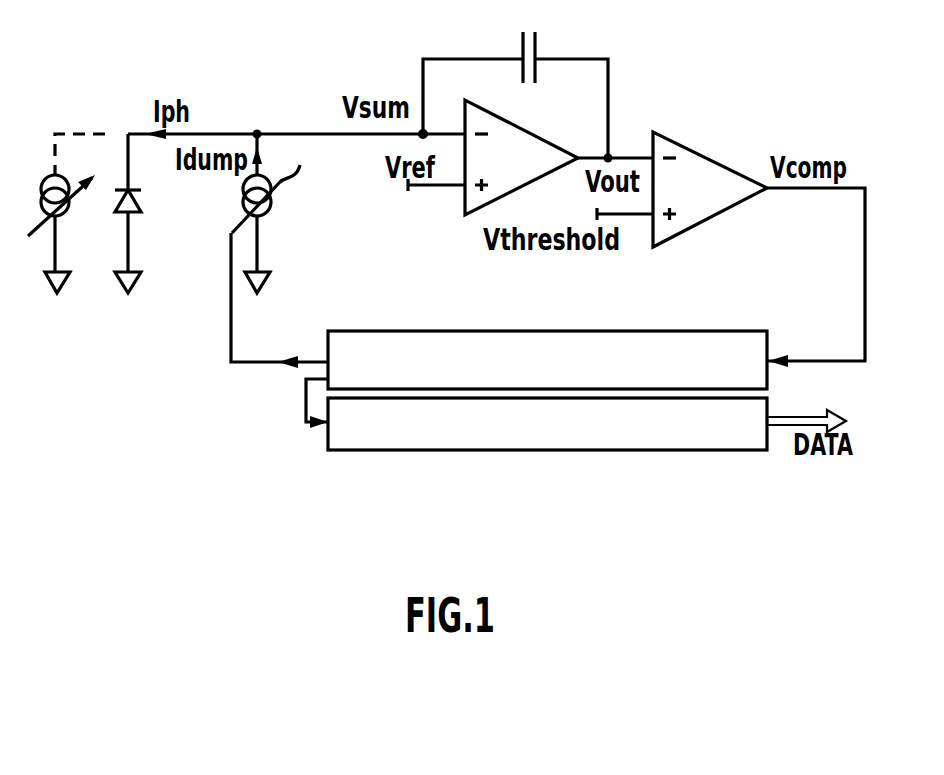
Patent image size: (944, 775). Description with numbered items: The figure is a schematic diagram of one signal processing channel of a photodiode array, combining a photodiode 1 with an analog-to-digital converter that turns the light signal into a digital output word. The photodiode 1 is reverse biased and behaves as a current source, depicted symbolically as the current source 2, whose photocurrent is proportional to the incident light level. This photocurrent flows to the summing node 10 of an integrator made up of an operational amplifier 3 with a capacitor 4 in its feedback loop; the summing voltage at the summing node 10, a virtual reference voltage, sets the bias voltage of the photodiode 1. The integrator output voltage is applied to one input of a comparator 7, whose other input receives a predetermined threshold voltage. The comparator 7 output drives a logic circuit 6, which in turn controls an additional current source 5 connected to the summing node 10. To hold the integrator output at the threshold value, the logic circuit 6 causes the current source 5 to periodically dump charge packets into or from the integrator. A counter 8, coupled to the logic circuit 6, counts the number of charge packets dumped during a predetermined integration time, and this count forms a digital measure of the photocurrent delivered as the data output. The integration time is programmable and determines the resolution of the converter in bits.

The photodiode 1 is at (140, 195).
The current source 2 is at (63, 222).
The operational amplifier 3 is at (520, 126).
The capacitor 4 is at (522, 36).
The additional current source 5 is at (263, 222).
The logic circuit 6 is at (581, 331).
The comparator 7 is at (717, 161).
The counter 8 is at (447, 452).
The summing node 10 is at (425, 132).